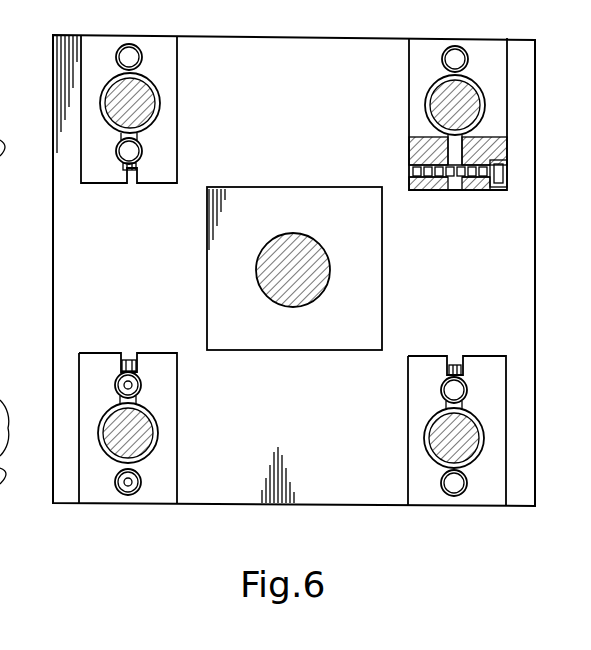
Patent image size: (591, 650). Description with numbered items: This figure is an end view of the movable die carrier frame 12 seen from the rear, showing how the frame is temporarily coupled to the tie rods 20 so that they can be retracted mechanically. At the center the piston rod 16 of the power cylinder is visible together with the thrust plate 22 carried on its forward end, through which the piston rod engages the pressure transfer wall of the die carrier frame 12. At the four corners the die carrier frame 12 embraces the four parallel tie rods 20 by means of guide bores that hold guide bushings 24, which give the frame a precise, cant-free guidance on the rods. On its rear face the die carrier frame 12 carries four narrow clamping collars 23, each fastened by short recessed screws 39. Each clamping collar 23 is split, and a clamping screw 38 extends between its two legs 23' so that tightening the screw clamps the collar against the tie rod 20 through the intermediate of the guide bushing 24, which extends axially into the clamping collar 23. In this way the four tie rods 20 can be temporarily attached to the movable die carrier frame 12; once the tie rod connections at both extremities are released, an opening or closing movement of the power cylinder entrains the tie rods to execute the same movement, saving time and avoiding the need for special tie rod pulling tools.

The movable die carrier frame 12 is at (380, 487).
The piston rod 16 is at (293, 250).
The tie rods 20 is at (108, 432).
The thrust plate 22 is at (292, 338).
The clamping collar 23 is at (332, 453).
The legs of the split clamping collar 23' is at (128, 269).
The guide bushing 24 is at (158, 433).
The clamping screw 38 is at (137, 367).
The recessed screws 39 is at (127, 480).